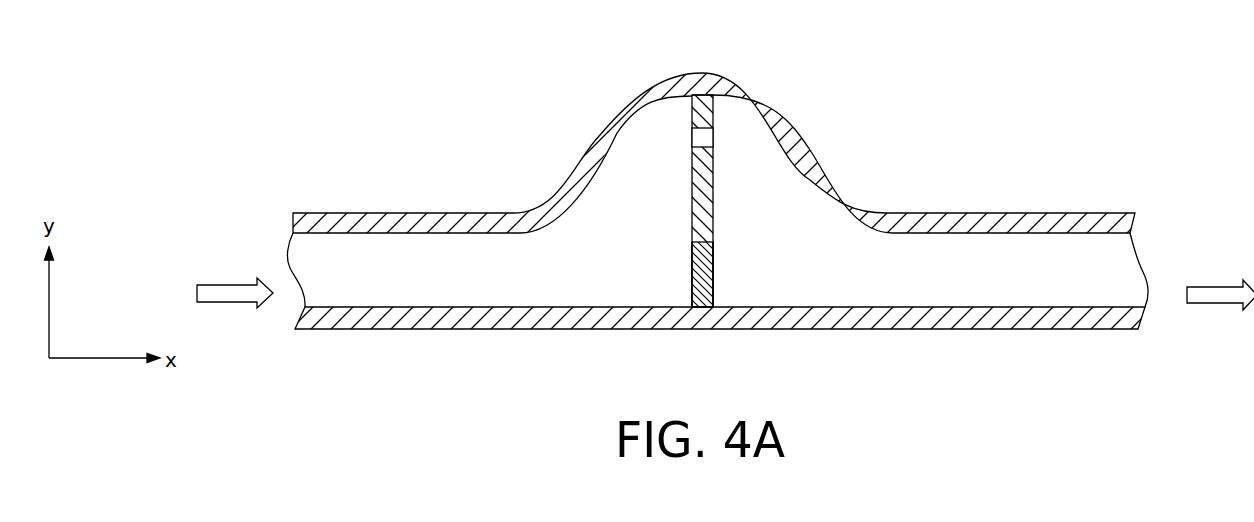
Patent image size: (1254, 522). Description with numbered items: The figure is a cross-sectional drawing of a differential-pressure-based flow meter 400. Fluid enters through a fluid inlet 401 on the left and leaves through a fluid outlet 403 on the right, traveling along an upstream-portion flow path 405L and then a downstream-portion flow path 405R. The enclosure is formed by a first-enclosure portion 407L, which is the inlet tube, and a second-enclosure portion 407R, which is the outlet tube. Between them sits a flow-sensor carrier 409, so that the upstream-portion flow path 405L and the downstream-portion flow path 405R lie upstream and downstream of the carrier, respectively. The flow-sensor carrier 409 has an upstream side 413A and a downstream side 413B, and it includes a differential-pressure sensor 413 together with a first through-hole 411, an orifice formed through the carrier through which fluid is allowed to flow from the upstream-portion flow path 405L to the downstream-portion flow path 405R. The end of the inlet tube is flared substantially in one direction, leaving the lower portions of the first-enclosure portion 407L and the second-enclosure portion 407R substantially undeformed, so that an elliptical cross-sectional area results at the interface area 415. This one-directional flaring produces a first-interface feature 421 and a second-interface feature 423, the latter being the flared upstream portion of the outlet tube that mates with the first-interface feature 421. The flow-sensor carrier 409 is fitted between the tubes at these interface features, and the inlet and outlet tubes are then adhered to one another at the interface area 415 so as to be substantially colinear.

The differential-pressure-based flow meter 400 is at (213, 83).
The fluid inlet 401 is at (210, 285).
The fluid outlet 403 is at (1228, 284).
The upstream-portion flow path 405L is at (478, 283).
The downstream-portion flow path 405R is at (895, 283).
The first-enclosure portion 407L is at (492, 212).
The second-enclosure portion 407R is at (884, 212).
The flow-sensor carrier 409 is at (692, 219).
The first through-hole 411 is at (692, 137).
The differential-pressure sensor 413 is at (717, 257).
The upstream side 413A is at (692, 268).
The downstream side 413B is at (713, 270).
The interface area 415 is at (703, 97).
The first-interface feature 421 is at (640, 82).
The second-interface feature 423 is at (765, 82).